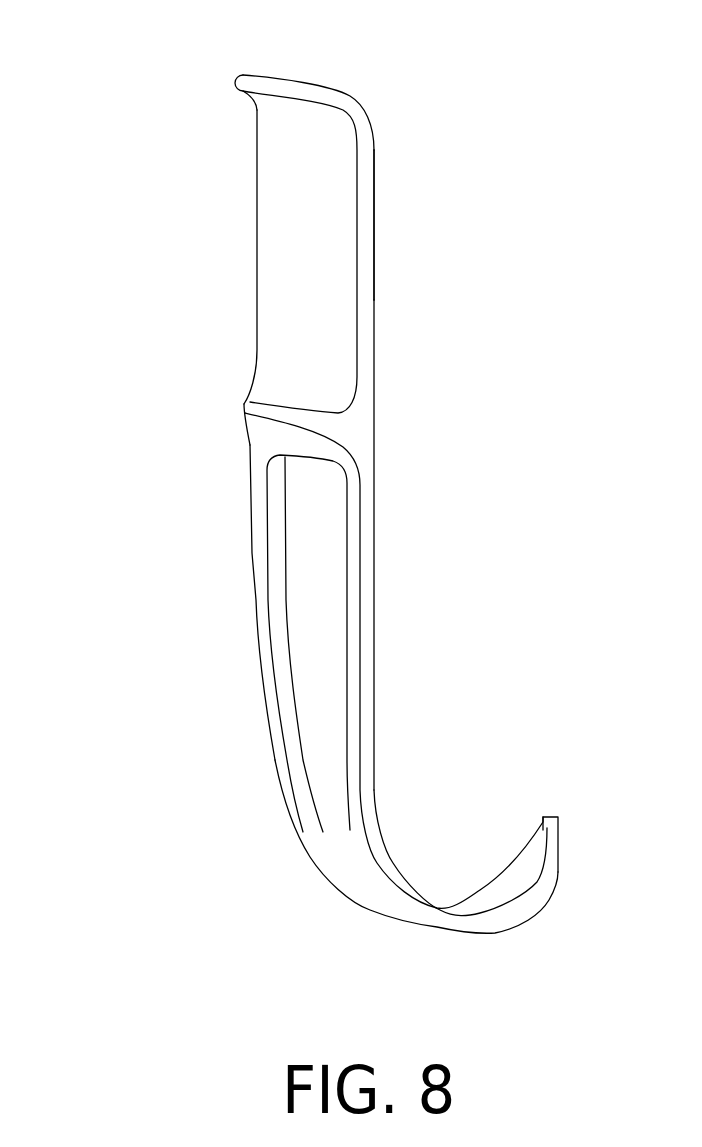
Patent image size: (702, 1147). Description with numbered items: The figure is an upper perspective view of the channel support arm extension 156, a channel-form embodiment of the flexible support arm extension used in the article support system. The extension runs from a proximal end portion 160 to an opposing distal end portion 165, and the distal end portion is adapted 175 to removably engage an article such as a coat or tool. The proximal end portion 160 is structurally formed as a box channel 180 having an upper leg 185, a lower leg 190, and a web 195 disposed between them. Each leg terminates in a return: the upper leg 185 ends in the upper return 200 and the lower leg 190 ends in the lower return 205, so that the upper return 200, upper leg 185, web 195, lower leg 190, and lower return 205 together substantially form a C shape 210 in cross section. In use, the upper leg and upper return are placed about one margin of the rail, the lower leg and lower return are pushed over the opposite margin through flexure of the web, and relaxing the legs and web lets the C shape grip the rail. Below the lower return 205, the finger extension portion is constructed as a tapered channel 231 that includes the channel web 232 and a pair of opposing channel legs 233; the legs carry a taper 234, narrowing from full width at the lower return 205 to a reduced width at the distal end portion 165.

The channel support arm extension 156 is at (374, 513).
The proximal end portion 160 is at (373, 150).
The distal end portion 165 is at (333, 890).
The adapted distal end portion 175 is at (542, 903).
The box channel 180 is at (373, 150).
The upper leg 185 is at (353, 95).
The lower leg 190 is at (298, 398).
The web 195 is at (373, 285).
The upper return 200 is at (250, 75).
The lower return 205 is at (245, 403).
The C shape 210 is at (162, 165).
The channel 231 is at (375, 675).
The channel web 232 is at (322, 627).
The channel legs 233 is at (362, 568).
The taper 234 is at (267, 553).